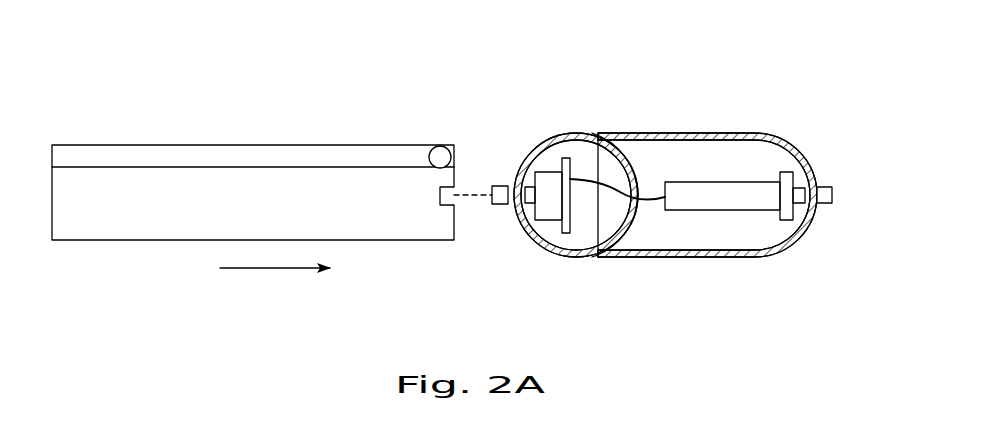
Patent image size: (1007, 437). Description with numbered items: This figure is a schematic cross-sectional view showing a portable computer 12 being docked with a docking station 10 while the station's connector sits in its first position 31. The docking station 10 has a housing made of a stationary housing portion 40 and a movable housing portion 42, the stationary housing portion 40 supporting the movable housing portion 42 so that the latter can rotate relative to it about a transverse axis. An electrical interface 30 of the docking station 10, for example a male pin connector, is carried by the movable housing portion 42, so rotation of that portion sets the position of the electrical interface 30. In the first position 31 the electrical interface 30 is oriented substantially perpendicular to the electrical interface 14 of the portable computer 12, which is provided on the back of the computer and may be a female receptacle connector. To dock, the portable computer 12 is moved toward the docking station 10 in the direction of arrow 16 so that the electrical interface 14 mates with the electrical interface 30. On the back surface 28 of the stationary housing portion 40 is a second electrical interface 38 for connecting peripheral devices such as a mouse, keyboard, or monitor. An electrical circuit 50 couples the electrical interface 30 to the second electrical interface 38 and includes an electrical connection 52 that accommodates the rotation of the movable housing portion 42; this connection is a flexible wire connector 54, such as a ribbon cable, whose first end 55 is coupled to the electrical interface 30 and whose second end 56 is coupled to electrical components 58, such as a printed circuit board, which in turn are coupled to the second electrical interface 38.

The docking station 10 is at (713, 83).
The portable computer 12 is at (205, 122).
The electrical interface 14 is at (452, 188).
The arrow 16 is at (275, 294).
The back surface 28 is at (815, 217).
The electrical interface 30 is at (497, 211).
The first position 31 is at (501, 187).
The second electrical interface 38 is at (837, 180).
The stationary housing portion 40 is at (734, 133).
The movable housing portion 42 is at (555, 257).
The electrical circuit 50 is at (687, 221).
The electrical connection 52 is at (608, 256).
The flexible wire connector 54 is at (609, 256).
The first end 55 is at (576, 172).
The second end 56 is at (638, 198).
The electrical components 58 is at (748, 192).